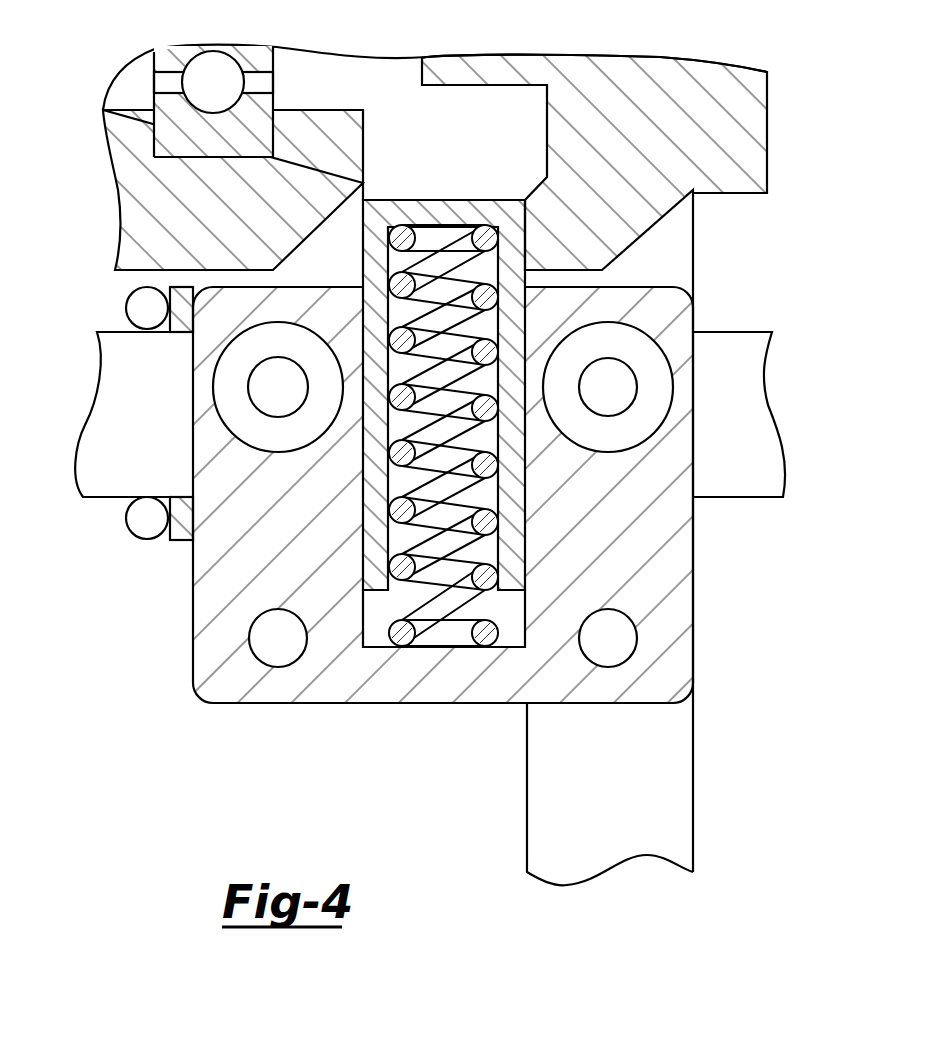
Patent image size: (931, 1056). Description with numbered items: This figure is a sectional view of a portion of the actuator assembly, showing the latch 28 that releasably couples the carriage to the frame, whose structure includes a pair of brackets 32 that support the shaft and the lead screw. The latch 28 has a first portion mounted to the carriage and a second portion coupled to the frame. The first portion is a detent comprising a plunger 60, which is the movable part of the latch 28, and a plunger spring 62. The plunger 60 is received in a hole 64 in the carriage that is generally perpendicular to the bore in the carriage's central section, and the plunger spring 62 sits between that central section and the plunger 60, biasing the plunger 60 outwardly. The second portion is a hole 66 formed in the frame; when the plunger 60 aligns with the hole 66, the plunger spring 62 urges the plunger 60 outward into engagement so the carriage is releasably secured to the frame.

The latch 28 is at (122, 378).
The brackets 32 is at (145, 187).
The plunger 60 is at (466, 225).
The plunger spring 62 is at (485, 492).
The hole 64 is at (513, 618).
The hole 66 is at (421, 200).